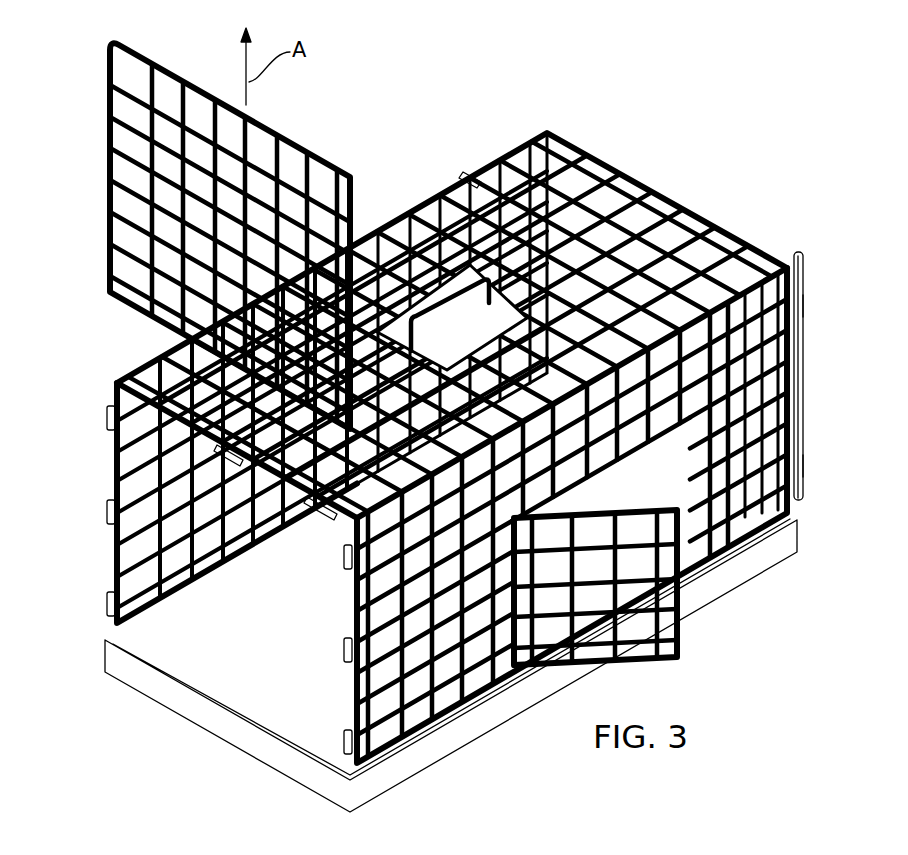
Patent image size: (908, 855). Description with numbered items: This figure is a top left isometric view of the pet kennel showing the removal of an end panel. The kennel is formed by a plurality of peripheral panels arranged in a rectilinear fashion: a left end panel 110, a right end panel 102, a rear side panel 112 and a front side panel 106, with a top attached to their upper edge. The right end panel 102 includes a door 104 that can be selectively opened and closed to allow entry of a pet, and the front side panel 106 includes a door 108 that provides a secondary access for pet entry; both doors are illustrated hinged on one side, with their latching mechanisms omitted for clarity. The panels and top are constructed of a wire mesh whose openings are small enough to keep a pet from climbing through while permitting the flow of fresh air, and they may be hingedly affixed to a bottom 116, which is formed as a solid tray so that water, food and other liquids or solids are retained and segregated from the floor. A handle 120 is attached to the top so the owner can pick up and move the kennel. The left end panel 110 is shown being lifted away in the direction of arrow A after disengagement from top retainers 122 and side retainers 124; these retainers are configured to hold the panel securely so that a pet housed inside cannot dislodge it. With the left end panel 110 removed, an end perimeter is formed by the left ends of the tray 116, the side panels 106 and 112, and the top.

The right end panel 102 is at (640, 186).
The door 104 is at (806, 255).
The front side panel 106 is at (352, 582).
The door 108 is at (680, 660).
The left end panel 110 is at (157, 66).
The rear side panel 112 is at (108, 418).
The bottom 116 is at (185, 722).
The handle 120 is at (444, 301).
The top retainers 122 is at (220, 458).
The side retainers 124 is at (108, 505).